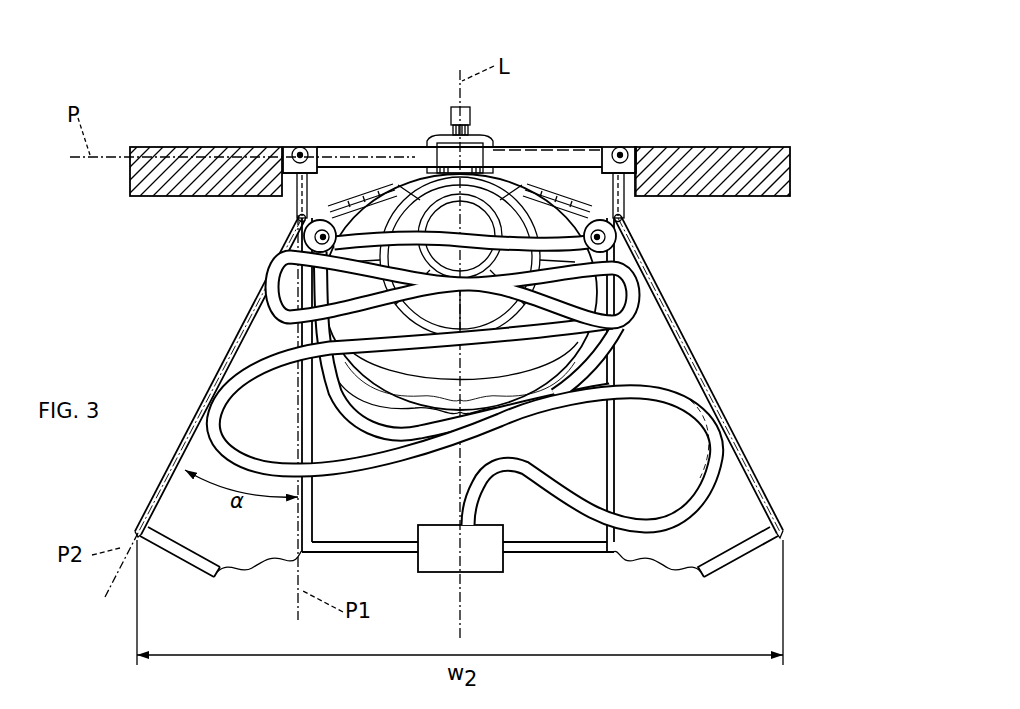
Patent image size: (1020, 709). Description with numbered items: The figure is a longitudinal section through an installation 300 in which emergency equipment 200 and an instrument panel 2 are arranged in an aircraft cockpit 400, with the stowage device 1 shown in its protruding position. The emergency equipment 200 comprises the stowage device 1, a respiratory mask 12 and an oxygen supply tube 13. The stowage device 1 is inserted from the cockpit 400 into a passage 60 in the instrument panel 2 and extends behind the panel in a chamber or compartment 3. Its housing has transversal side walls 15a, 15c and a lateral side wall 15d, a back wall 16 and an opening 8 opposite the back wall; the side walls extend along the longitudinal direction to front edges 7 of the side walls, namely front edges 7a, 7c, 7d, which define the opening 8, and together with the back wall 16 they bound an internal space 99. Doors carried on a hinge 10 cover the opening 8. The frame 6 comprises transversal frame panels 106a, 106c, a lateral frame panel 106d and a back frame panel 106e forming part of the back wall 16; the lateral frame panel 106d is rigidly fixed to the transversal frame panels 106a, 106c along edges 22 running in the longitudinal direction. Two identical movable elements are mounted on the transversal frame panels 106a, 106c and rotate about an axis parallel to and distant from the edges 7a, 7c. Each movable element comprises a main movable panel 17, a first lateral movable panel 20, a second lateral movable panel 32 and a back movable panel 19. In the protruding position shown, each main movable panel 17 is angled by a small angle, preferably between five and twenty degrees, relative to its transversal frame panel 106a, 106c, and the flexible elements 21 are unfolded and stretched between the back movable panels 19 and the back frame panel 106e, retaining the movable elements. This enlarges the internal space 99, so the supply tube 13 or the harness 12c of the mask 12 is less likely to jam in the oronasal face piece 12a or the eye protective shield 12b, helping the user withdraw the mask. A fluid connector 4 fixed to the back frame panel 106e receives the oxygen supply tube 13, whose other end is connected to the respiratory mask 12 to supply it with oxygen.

The stowage device 1 is at (648, 83).
The instrument panel 2 is at (757, 165).
The chamber or compartment 3 is at (764, 276).
The fluid connector 4 is at (447, 563).
The frame 6 is at (281, 138).
The right mounting bracket 7 is at (637, 160).
The front edge 7a is at (308, 175).
The front edge 7c is at (609, 160).
The front edge 7d is at (537, 160).
The opening 8 is at (366, 157).
The hinge 10 is at (300, 150).
The respiratory mask 12 is at (277, 334).
The oronasal face piece 12a is at (610, 240).
The eye protective shield 12b is at (585, 300).
The harness 12c is at (610, 353).
The oxygen supply tube 13 is at (707, 486).
The transversal side wall 15a is at (222, 320).
The transversal side wall 15c is at (732, 404).
The lateral side wall 15d is at (575, 532).
The back wall 16 is at (785, 546).
The main movable panel 17 is at (267, 287).
The back movable panel 19 is at (208, 573).
The first lateral movable panel 20 is at (720, 526).
The flexible element 21 is at (247, 570).
The edge 22 is at (313, 512).
The second lateral movable panel 32 is at (200, 526).
The passage 60 is at (634, 190).
The internal space 99 is at (578, 466).
The transversal frame panel 106a is at (298, 203).
The transversal frame panel 106c is at (625, 203).
The lateral frame panel 106d is at (535, 528).
The back frame panel 106e is at (400, 546).
The emergency equipment 200 is at (120, 489).
The installation 300 is at (815, 135).
The cockpit 400 is at (203, 131).